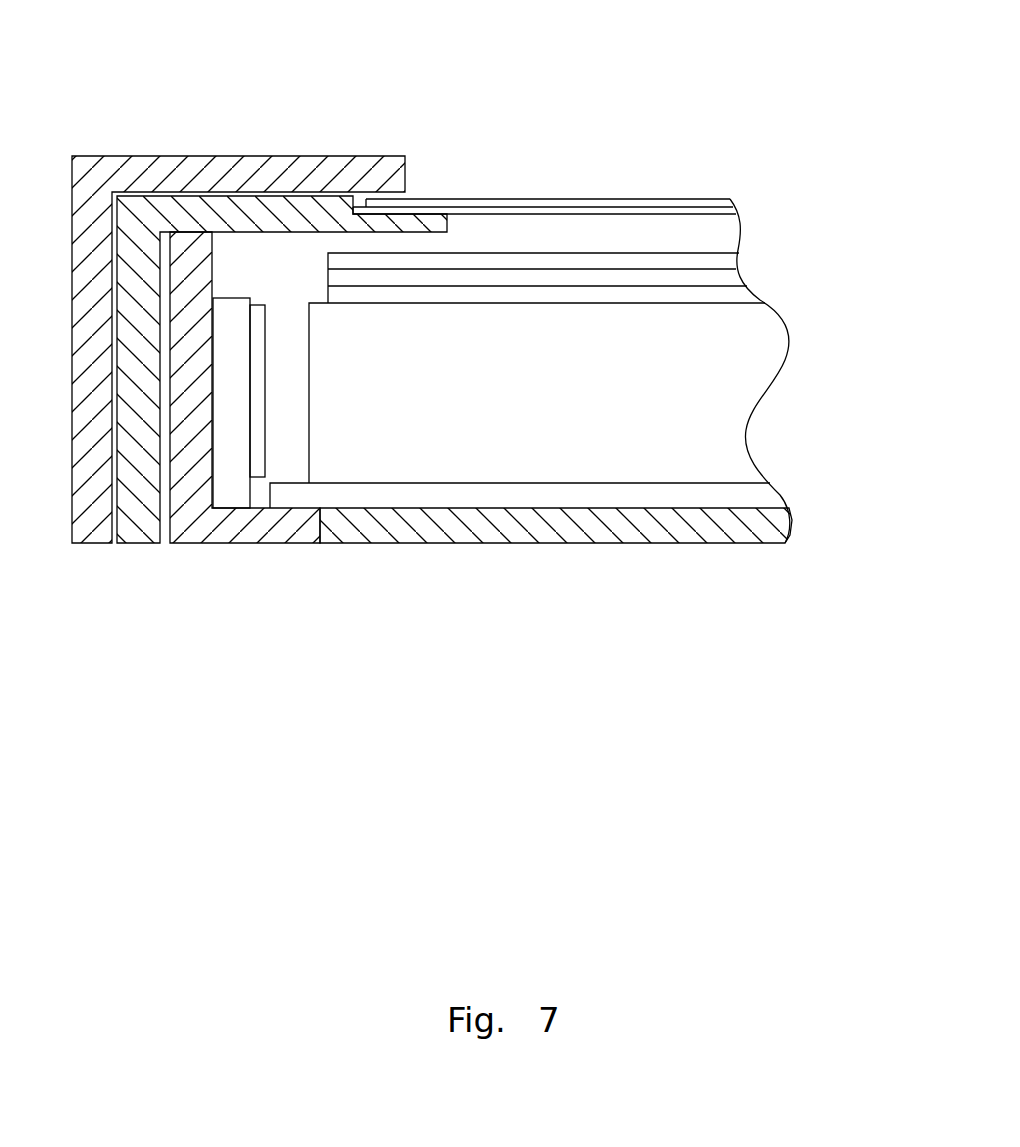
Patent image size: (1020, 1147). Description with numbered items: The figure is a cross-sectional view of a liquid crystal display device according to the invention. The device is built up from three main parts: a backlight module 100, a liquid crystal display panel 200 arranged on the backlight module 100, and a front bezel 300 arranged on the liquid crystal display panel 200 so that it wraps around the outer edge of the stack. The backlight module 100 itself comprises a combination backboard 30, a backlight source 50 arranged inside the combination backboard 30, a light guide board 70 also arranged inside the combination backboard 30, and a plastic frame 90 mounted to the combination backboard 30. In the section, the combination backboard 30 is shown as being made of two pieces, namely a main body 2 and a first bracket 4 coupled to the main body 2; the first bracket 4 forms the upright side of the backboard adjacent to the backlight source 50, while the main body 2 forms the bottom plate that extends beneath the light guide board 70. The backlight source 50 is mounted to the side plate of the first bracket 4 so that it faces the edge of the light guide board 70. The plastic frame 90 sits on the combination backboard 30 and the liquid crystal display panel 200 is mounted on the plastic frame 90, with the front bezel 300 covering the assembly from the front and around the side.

The front bezel 300 is at (213, 163).
The liquid crystal display panel 200 is at (518, 208).
The backlight module 100 is at (685, 732).
The plastic frame 90 is at (137, 477).
The light guide board 70 is at (525, 438).
The backlight source 50 is at (237, 455).
The combination backboard 30 is at (467, 665).
The first bracket 4 is at (267, 530).
The main body 2 is at (385, 530).